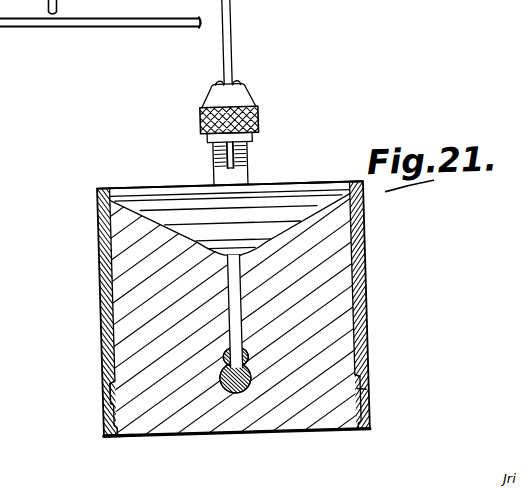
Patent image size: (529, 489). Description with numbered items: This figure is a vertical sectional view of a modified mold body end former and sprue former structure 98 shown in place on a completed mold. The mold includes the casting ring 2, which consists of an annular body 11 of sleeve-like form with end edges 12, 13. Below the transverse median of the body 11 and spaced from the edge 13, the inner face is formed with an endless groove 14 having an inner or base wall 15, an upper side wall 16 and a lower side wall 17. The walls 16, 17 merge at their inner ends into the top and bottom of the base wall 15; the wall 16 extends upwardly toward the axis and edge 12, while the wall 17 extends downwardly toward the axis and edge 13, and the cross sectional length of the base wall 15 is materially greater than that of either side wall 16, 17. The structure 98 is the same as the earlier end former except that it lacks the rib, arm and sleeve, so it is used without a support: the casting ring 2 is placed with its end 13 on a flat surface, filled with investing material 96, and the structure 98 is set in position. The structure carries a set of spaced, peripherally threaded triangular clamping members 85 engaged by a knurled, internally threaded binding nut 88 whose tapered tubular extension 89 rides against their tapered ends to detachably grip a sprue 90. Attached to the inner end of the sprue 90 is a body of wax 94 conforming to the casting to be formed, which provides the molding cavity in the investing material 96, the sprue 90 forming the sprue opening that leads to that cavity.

The casting ring 2 is at (96, 328).
The annular body 11 is at (365, 324).
The end edge 12 is at (100, 198).
The end edge 13 is at (106, 434).
The endless groove 14 is at (107, 404).
The base wall 15 is at (105, 394).
The upper side wall 16 is at (105, 376).
The lower side wall 17 is at (104, 426).
The clamping members 85 is at (254, 158).
The binding nut 88 is at (264, 114).
The tubular extension 89 is at (236, 38).
The sprue 90 is at (241, 282).
The body of wax 94 is at (230, 397).
The investing material 96 is at (153, 305).
The end former and sprue former structure 98 is at (322, 176).